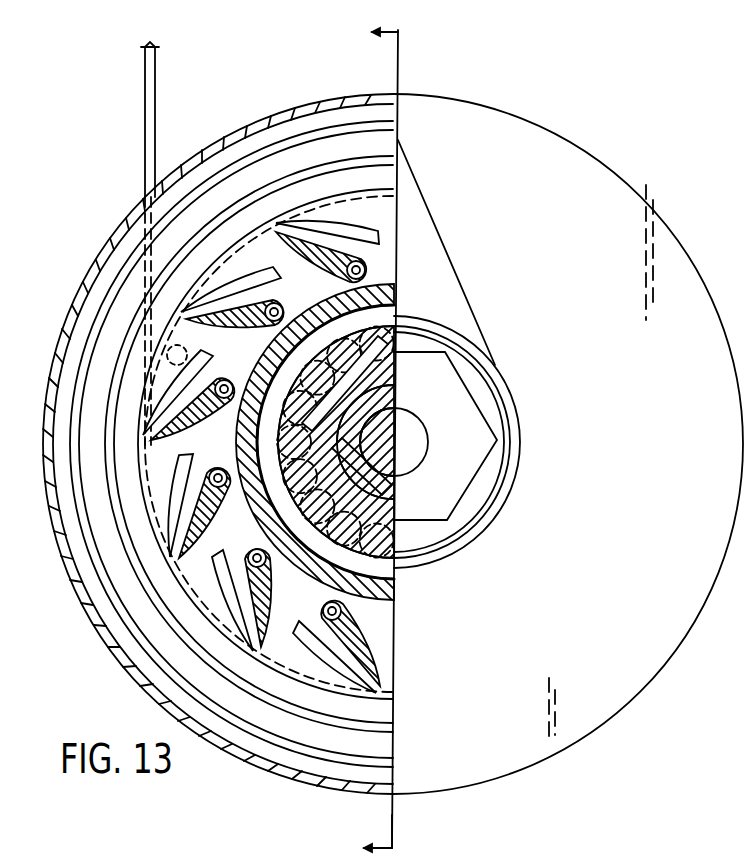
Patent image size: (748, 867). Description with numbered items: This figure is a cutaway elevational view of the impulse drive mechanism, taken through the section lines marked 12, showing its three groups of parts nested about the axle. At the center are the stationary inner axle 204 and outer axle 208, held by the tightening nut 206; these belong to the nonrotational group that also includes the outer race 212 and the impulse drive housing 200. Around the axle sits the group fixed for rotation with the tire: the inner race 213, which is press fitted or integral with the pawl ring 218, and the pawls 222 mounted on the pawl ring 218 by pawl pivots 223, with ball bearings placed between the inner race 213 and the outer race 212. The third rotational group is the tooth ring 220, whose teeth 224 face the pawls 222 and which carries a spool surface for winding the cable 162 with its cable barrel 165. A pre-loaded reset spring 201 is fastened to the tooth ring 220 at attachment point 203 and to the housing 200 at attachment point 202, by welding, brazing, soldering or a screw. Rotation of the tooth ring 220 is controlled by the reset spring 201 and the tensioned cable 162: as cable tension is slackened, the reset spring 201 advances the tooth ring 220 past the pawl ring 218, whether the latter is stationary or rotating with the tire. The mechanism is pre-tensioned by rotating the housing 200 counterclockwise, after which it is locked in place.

The impulse drive housing 200 is at (572, 228).
The section line 12- 12 is at (355, 443).
The attachment point 202 is at (397, 100).
The reset spring 201 is at (400, 120).
The attachment point 203 is at (396, 700).
The tooth ring 220 is at (397, 216).
The cable 162 is at (155, 90).
The pawl ring 218 is at (322, 302).
The inner race 213 is at (396, 322).
The outer race 212 is at (380, 366).
The outer axle 208 is at (398, 394).
The tightening nut 206 is at (472, 468).
The inner axle 204 is at (404, 448).
The pawls 222 is at (385, 655).
The pawl pivots 223 is at (398, 600).
The teeth 224 is at (283, 650).
The cable barrel 165 is at (188, 355).